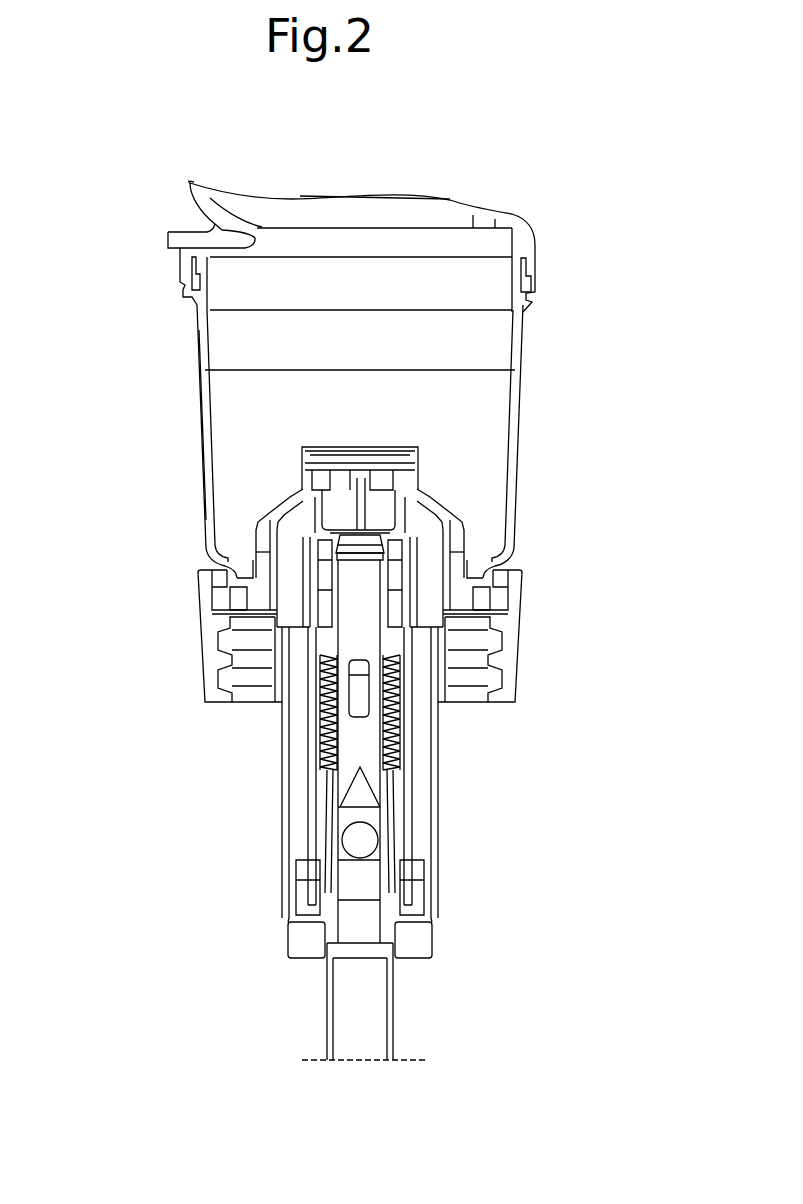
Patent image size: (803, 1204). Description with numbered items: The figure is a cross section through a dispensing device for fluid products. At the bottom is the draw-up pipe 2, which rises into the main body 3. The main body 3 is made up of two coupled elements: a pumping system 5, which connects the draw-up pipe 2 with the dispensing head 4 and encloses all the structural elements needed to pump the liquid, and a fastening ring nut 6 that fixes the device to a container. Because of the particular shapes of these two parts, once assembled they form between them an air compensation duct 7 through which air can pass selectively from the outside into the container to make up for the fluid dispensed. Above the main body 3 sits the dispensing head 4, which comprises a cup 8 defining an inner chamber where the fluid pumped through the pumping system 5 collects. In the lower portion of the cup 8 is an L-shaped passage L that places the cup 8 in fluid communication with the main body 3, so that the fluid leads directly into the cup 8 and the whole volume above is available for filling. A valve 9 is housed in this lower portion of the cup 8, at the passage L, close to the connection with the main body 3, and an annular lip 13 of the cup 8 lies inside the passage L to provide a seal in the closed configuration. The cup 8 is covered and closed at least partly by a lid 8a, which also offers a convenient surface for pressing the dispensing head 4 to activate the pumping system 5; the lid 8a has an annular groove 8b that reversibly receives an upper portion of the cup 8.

The draw-up pipe 2 is at (323, 1046).
The main body 3 is at (267, 803).
The dispensing head 4 is at (196, 420).
The pumping system 5 is at (398, 772).
The fastening ring nut 6 is at (503, 650).
The air compensation duct 7 is at (540, 565).
The cup 8 is at (515, 382).
The lid 8a is at (440, 195).
The annular groove 8b is at (536, 268).
The valve 9 is at (345, 512).
The annular lip 13 is at (405, 548).
The passage L is at (351, 447).